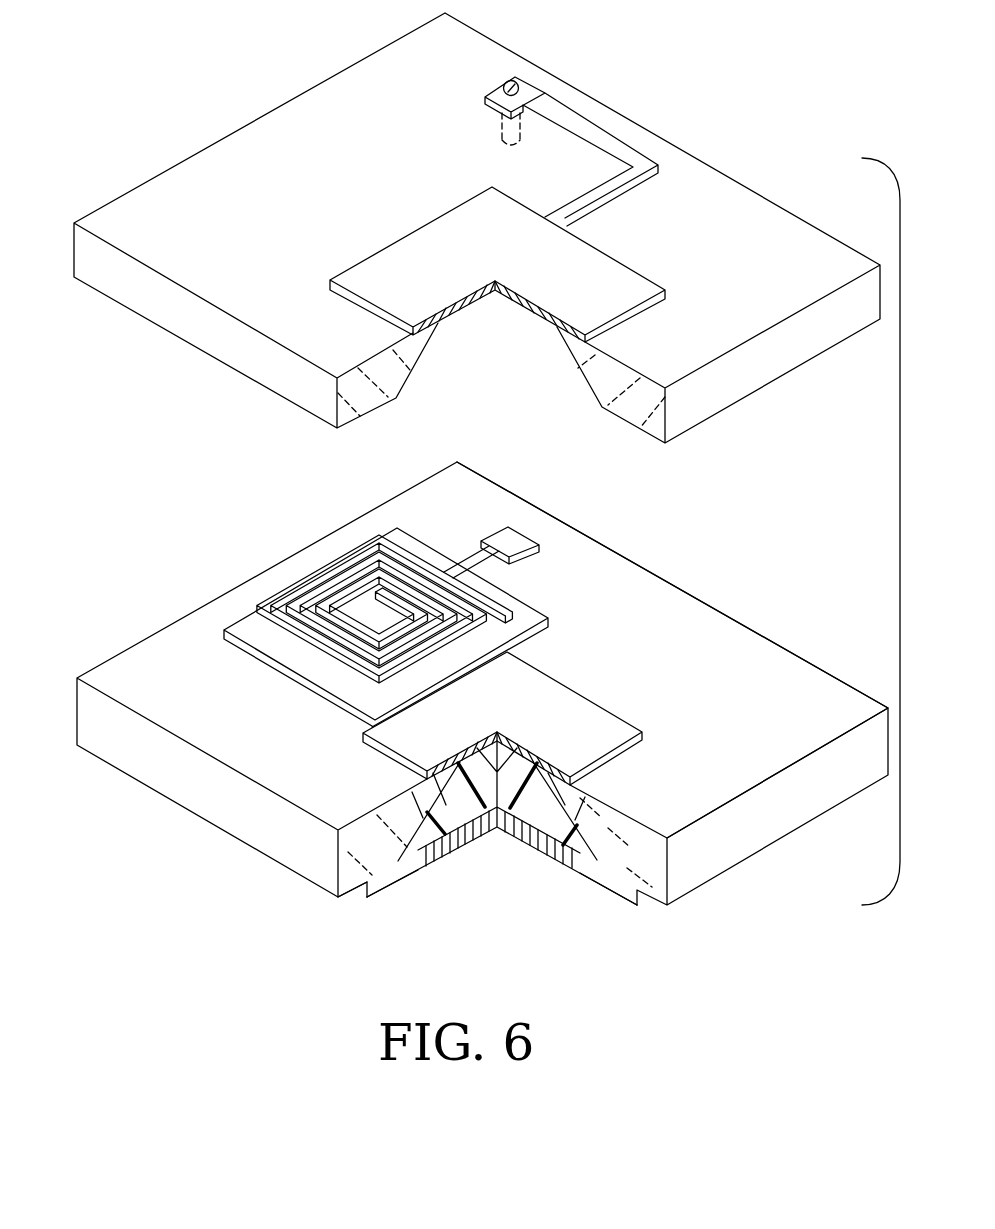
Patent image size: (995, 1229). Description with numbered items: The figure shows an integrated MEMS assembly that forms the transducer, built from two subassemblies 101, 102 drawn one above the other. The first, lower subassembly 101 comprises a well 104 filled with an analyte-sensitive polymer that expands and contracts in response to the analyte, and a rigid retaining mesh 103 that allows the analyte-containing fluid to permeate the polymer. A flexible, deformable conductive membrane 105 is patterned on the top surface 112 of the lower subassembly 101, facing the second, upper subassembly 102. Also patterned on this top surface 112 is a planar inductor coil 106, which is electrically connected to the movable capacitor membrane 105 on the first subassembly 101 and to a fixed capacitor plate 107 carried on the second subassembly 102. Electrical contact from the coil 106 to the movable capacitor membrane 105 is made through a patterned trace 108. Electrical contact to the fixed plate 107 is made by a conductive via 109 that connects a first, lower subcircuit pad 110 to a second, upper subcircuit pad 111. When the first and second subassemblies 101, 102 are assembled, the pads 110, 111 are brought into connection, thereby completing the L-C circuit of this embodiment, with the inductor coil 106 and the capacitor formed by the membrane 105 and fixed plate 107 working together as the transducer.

The first subassembly 101 is at (166, 625).
The second subassembly 102 is at (259, 245).
The rigid retaining mesh 103 is at (408, 882).
The well 104 is at (533, 798).
The conductive membrane 105 is at (560, 703).
The planar inductor coil 106 is at (298, 597).
The fixed capacitor plate 107 is at (609, 265).
The patterned trace 108 is at (308, 672).
The conductive via 109 is at (516, 78).
The first subcircuit pad 110 is at (517, 542).
The second subcircuit pad 111 is at (482, 93).
The top surface 112 is at (774, 723).